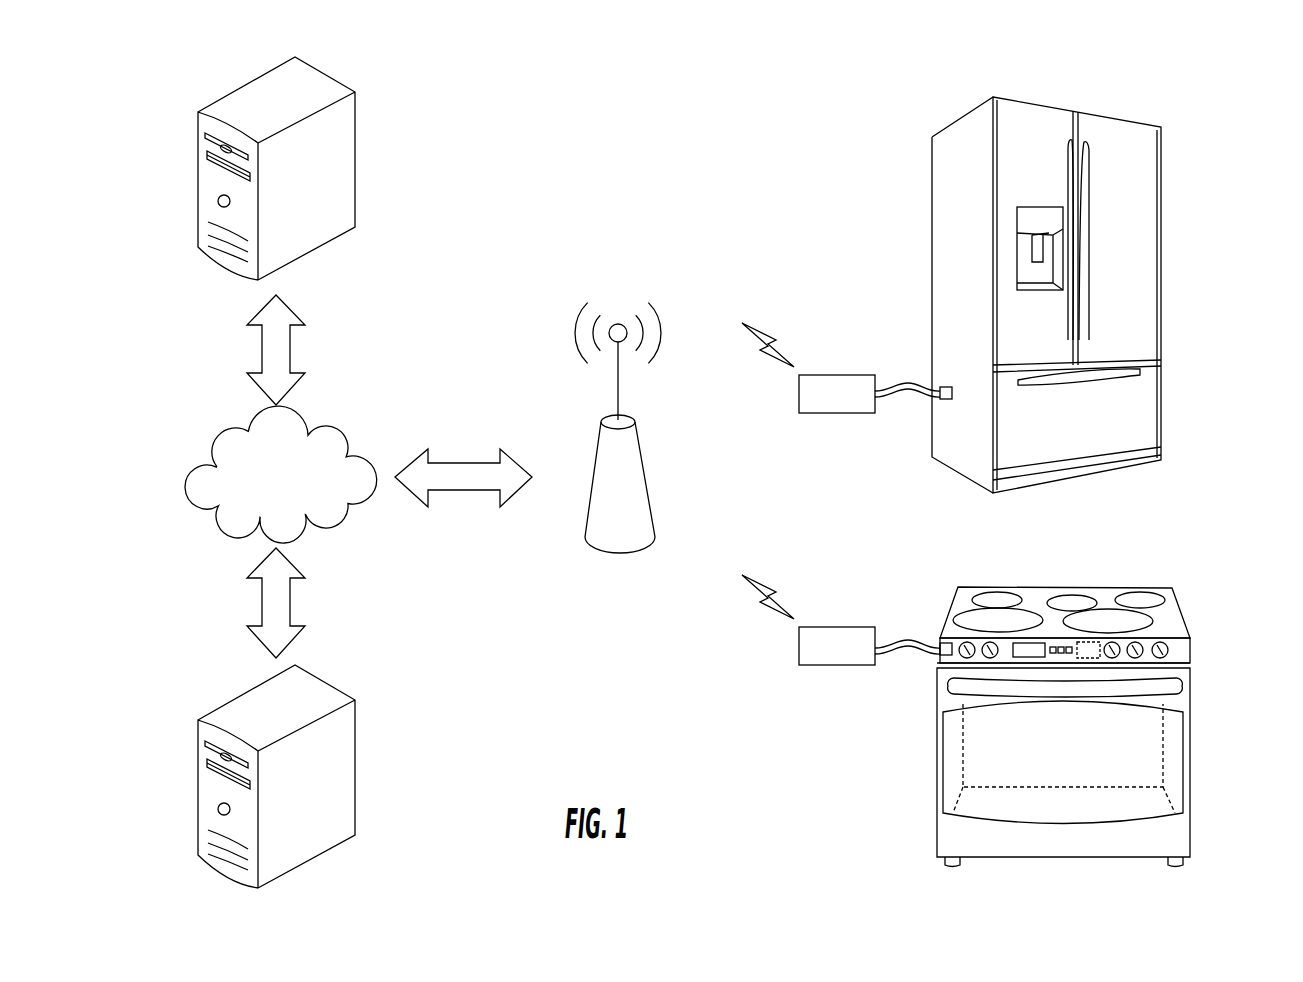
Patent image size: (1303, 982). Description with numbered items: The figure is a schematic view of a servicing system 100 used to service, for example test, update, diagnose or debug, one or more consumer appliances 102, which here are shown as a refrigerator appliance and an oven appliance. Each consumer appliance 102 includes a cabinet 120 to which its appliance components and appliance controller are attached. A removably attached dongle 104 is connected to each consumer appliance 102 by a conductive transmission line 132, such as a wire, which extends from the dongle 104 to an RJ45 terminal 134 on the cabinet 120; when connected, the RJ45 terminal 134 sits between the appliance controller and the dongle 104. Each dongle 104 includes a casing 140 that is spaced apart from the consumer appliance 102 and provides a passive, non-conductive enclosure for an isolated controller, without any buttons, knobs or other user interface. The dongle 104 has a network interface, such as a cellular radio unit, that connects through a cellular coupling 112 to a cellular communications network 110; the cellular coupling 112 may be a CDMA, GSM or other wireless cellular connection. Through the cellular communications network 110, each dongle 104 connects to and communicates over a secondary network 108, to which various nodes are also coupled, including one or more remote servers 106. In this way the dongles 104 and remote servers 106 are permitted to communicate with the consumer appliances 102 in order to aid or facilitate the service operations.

The servicing system 100 is at (568, 137).
The consumer appliance 102 is at (1068, 482).
The dongle 104 is at (860, 491).
The remote server 106 is at (183, 167).
The secondary network 108 is at (303, 480).
The cellular communications network 110 is at (598, 555).
The cellular coupling 112 is at (765, 322).
The cabinet 120 is at (945, 177).
The conductive transmission line 132 is at (893, 385).
The RJ45 terminal 134 is at (948, 385).
The casing 140 is at (835, 413).